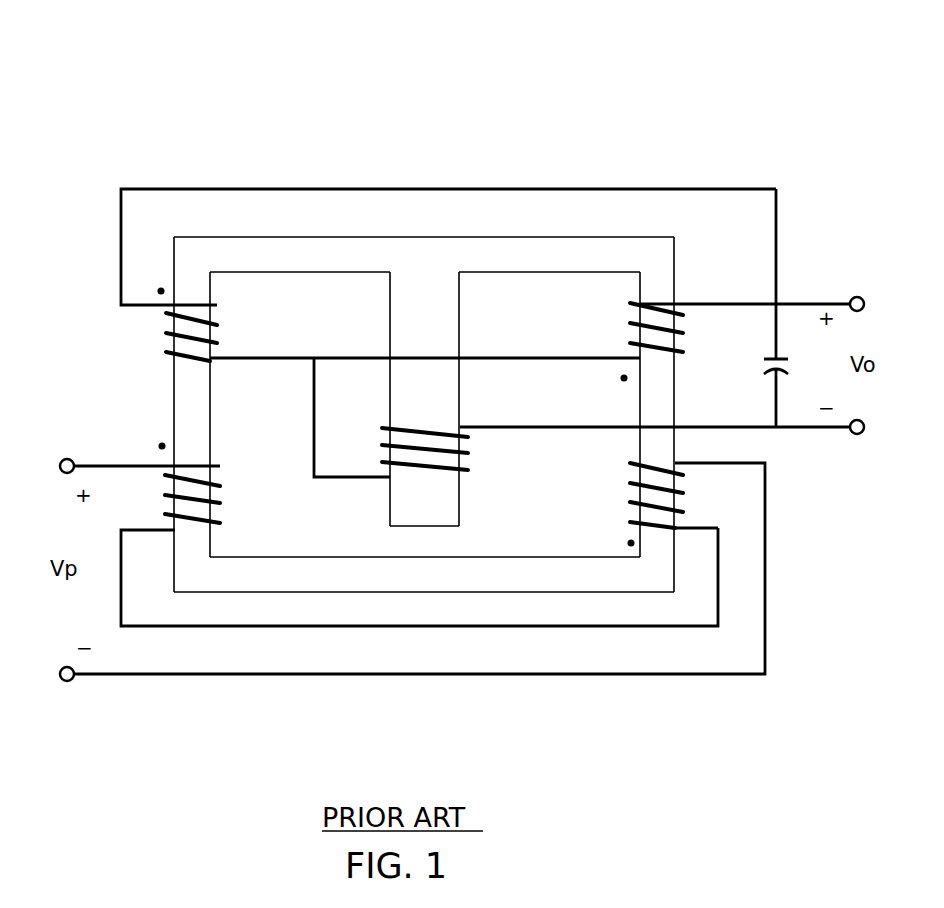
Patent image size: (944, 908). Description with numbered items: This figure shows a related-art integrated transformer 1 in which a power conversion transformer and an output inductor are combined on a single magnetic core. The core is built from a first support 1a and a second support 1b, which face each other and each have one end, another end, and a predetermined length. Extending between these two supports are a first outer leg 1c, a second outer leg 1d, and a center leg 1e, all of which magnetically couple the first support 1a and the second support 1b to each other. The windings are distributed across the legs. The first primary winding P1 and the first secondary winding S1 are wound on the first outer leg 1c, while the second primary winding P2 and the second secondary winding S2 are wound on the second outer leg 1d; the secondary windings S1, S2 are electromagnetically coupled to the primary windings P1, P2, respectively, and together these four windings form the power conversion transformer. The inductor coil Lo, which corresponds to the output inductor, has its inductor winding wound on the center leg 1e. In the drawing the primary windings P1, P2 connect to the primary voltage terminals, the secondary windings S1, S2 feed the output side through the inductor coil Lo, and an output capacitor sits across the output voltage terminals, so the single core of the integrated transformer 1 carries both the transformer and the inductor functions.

The integrated transformer 1 is at (454, 34).
The first support 1a is at (427, 272).
The second support 1b is at (537, 578).
The first outer leg 1c is at (192, 418).
The second outer leg 1d is at (662, 400).
The center leg 1e is at (451, 512).
The inductor coil Lo is at (468, 455).
The first secondary winding S1 is at (448, 275).
The second secondary winding S2 is at (662, 311).
The first primary winding P1 is at (389, 535).
The second primary winding P2 is at (412, 572).